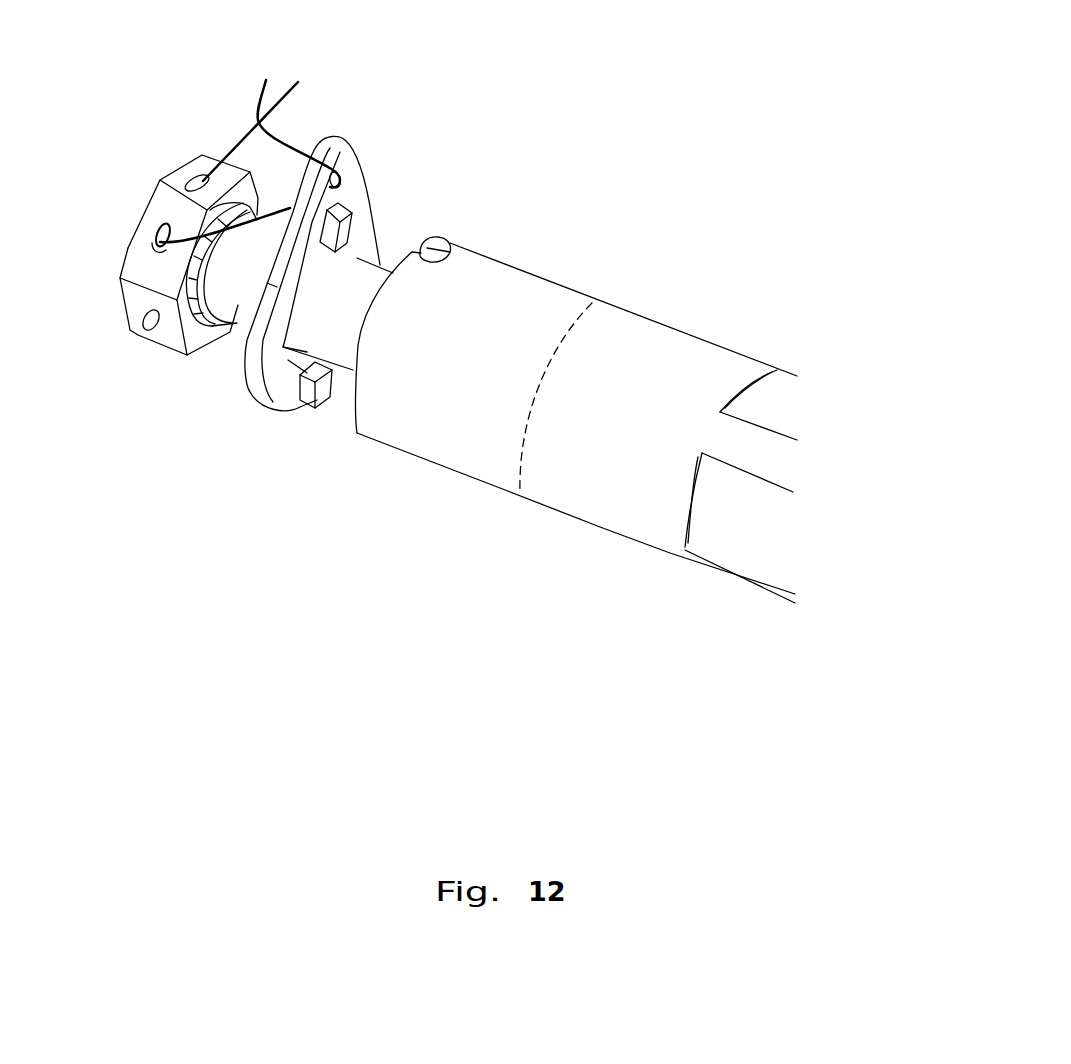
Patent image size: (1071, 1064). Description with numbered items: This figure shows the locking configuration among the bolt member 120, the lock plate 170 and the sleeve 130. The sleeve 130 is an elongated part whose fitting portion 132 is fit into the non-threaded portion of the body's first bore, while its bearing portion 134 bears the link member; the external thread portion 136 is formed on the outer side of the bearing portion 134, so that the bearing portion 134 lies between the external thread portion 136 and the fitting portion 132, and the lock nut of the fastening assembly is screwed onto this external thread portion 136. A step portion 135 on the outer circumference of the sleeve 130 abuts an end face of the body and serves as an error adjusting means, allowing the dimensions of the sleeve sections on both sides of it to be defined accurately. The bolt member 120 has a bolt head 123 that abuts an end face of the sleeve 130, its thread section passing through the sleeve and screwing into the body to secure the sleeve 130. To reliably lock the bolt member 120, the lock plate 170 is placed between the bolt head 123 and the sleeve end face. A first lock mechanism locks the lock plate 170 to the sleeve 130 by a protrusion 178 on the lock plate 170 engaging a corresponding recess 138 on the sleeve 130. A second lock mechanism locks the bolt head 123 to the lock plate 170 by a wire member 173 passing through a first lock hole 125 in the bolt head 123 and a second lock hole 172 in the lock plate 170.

The bolt member 120 is at (132, 272).
The bolt head 123 is at (137, 302).
The first lock hole 125 is at (160, 242).
The sleeve 130 is at (440, 568).
The fitting portion 132 is at (755, 558).
The bearing portion 134 is at (625, 513).
The step portion 135 is at (746, 382).
The external thread portion 136 is at (403, 427).
The recess 138 is at (440, 245).
The lock plate 170 is at (260, 380).
The second lock hole 172 is at (342, 180).
The wire member 173 is at (263, 108).
The protrusion 178 is at (376, 240).